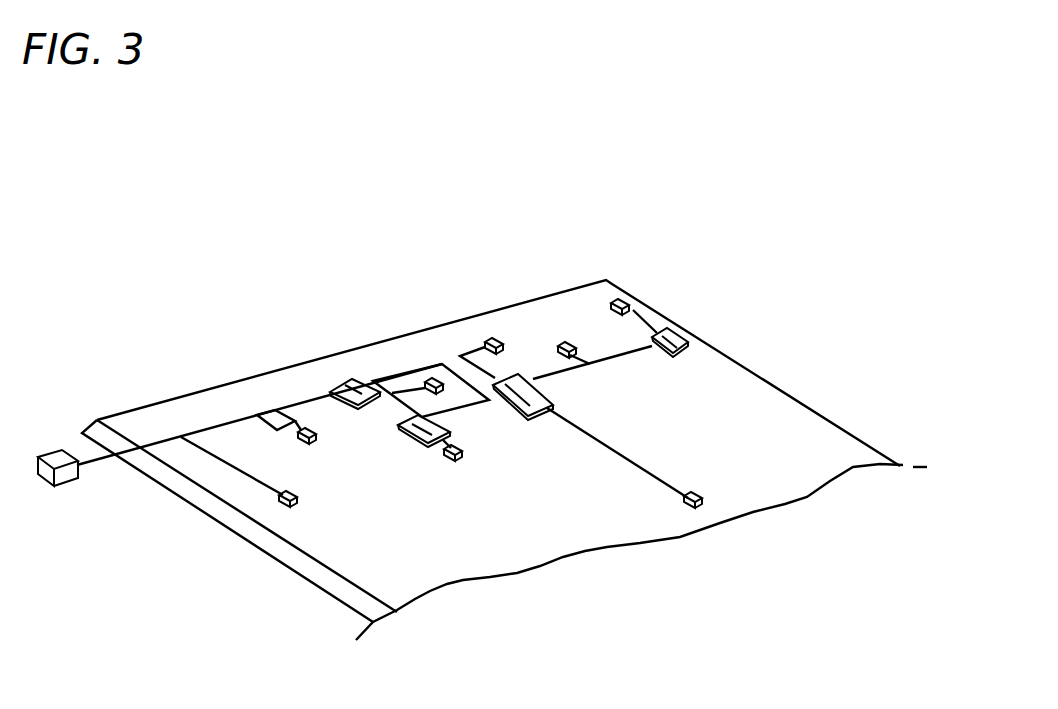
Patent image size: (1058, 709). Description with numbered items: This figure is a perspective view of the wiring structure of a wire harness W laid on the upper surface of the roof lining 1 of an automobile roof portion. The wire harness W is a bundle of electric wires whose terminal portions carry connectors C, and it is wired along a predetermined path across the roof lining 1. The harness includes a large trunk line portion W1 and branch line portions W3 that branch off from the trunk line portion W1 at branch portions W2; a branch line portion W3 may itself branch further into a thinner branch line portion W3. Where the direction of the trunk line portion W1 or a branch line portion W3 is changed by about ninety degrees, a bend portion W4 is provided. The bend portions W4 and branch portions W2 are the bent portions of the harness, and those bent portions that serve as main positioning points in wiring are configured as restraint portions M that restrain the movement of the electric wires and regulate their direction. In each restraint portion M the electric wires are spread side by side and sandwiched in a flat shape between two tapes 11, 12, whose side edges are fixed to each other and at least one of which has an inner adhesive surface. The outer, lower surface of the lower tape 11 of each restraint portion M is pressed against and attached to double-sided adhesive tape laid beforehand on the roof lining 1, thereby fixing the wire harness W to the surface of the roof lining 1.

The roof lining 1 is at (775, 415).
The tape 11 is at (516, 391).
The tape 12 is at (700, 402).
The wire harness W is at (407, 406).
The trunk line portion W1 is at (233, 418).
The branch portion W2 is at (181, 440).
The branch line portion W3 is at (250, 480).
The bend portion W4 is at (440, 345).
The restraint portion M is at (516, 395).
The connector C is at (492, 340).